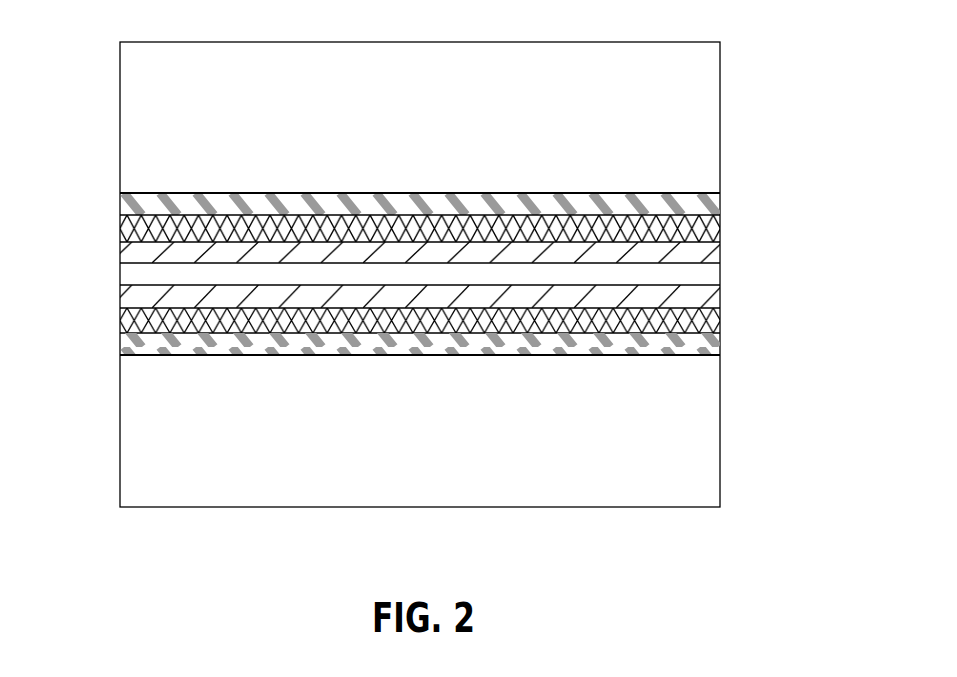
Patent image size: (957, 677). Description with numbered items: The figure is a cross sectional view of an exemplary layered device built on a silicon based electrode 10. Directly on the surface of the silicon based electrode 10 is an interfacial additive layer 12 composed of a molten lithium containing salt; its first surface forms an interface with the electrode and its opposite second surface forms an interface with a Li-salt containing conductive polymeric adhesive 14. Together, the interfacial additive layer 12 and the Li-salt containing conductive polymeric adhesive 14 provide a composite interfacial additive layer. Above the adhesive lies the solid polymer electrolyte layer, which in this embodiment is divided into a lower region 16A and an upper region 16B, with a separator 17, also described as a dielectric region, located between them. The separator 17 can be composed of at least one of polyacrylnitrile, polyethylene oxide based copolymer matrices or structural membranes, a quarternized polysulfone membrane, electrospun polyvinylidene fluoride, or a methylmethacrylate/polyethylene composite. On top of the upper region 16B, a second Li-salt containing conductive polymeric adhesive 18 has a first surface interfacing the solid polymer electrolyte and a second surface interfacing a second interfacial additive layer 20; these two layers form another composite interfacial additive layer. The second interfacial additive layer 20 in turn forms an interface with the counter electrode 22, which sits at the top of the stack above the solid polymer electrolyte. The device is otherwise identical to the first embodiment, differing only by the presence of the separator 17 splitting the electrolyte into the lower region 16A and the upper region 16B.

The silicon based electrode 10 is at (437, 444).
The interfacial additive layer 12 is at (132, 343).
The Li-salt containing conductive polymeric adhesive 14 is at (722, 317).
The lower region of the solid polymer electrolyte layer 16A is at (132, 296).
The upper region of the solid polymer electrolyte layer 16B is at (132, 250).
The separator 17 is at (705, 272).
The second Li-salt containing conductive polymeric adhesive 18 is at (722, 223).
The second interfacial additive layer 20 is at (132, 202).
The counter electrode 22 is at (437, 130).